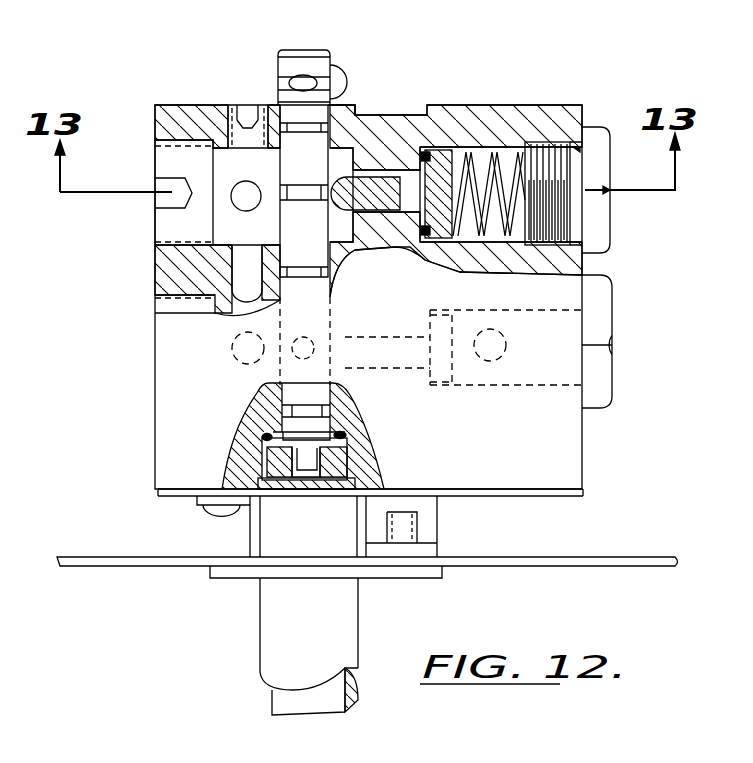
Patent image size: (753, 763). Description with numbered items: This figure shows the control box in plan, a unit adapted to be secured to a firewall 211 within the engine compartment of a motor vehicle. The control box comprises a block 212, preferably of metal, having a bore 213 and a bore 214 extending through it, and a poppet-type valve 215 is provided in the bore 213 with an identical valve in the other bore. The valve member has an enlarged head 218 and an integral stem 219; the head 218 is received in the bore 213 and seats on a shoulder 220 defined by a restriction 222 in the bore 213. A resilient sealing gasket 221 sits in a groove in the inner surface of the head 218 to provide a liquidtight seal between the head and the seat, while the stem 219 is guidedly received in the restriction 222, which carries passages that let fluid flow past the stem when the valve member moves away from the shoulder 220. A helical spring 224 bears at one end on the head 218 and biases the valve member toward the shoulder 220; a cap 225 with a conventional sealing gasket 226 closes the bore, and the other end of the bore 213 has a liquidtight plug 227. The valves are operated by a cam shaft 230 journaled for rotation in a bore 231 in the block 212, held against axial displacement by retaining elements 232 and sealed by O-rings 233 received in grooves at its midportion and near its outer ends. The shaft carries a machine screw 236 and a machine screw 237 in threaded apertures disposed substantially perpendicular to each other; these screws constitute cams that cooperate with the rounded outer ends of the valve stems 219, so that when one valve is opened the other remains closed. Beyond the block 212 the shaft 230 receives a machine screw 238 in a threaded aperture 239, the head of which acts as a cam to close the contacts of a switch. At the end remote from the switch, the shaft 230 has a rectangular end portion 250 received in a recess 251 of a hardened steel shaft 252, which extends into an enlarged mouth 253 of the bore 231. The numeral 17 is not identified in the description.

The chamber 17 is at (420, 205).
The firewall 211 is at (123, 566).
The block 212 is at (548, 450).
The bore 213 is at (165, 228).
The bore 214 is at (560, 368).
The poppet-type valve 215 is at (540, 136).
The enlarged head 218 is at (430, 162).
The stem 219 is at (350, 187).
The shoulder 220 is at (425, 155).
The resilient sealing gasket 221 is at (437, 242).
The restriction 222 is at (388, 182).
The helical spring 224 is at (493, 157).
The cap 225 is at (603, 218).
The sealing gasket 226 is at (579, 150).
The liquidtight plug 227 is at (163, 160).
The cam shaft 230 is at (352, 38).
The bore 231 is at (330, 130).
The retaining elements 232 is at (278, 122).
The O-rings 233 is at (350, 436).
The machine screw 236 is at (313, 190).
The machine screw 237 is at (313, 344).
The machine screw 238 is at (348, 72).
The threaded aperture 239 is at (300, 80).
The rectangular end portion 250 is at (317, 457).
The recess 251 is at (295, 458).
The hardened steel shaft 252 is at (343, 477).
The enlarged mouth 253 is at (265, 435).